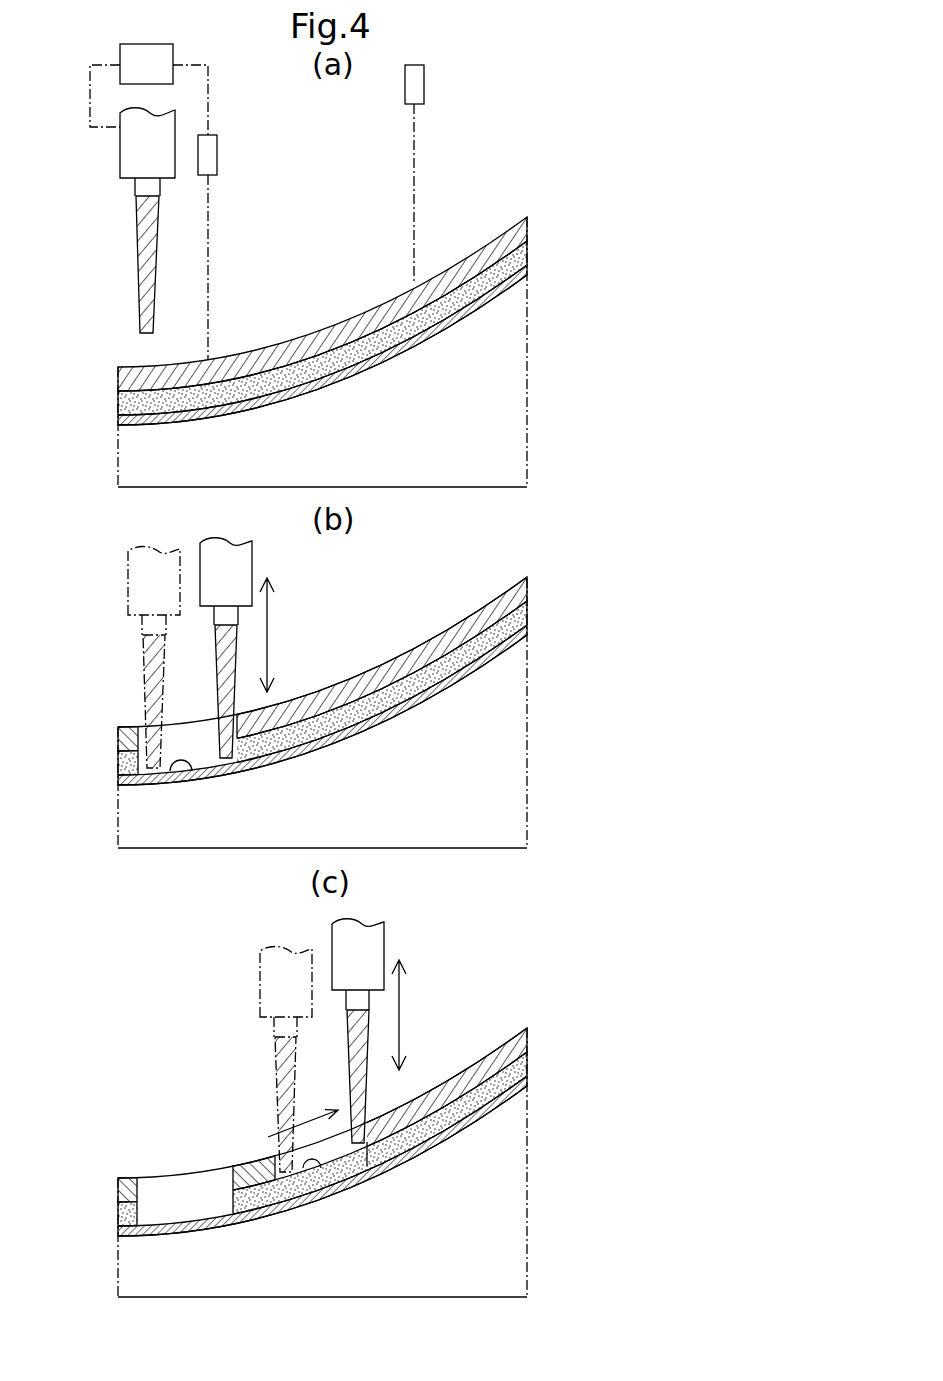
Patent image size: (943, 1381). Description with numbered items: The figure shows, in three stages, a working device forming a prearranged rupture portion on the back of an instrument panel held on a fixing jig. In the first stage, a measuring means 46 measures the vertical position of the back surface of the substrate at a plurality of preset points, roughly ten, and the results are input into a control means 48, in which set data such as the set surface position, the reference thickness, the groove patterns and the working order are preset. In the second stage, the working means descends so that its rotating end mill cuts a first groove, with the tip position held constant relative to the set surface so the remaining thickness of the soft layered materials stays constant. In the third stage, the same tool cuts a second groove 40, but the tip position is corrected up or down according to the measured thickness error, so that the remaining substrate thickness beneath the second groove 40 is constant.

The second groove 40 is at (305, 1172).
The measuring means 46 is at (207, 155).
The control means 48 is at (135, 56).